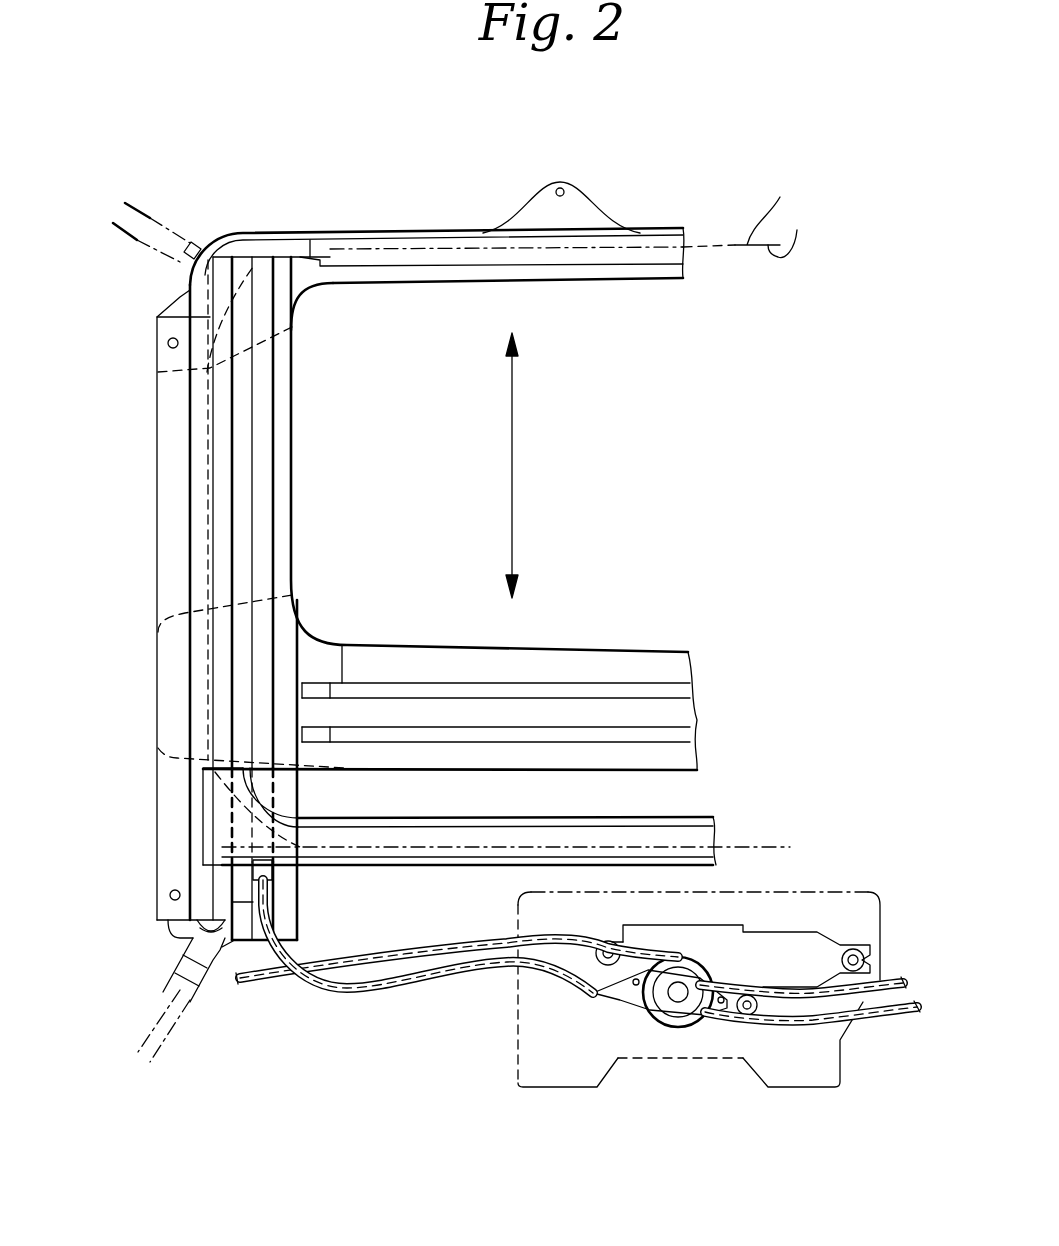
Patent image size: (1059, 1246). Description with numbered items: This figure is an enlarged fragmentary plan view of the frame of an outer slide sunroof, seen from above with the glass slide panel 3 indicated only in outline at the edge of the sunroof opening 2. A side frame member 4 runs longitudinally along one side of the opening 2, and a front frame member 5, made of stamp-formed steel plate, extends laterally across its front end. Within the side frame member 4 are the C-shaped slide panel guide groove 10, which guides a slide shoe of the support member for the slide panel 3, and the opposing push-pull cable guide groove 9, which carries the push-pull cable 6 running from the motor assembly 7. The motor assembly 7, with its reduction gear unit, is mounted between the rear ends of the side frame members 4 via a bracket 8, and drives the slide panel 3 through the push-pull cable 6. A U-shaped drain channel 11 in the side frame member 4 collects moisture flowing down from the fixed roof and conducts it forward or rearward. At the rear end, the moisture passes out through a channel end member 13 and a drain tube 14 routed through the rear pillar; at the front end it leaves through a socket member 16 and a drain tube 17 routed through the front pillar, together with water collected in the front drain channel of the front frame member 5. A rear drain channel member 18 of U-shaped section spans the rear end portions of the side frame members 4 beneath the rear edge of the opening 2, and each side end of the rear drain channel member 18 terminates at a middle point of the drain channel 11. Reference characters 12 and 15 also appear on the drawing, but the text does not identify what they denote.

The opening 2 is at (797, 230).
The slide panel 3 is at (780, 197).
The side frame member 4 is at (153, 423).
The front frame member 5 is at (663, 228).
The push-pull cable 6 is at (427, 1027).
The motor assembly 7 is at (672, 1033).
The bracket 8 is at (515, 1062).
The push-pull cable guide groove 9 is at (247, 455).
The slide panel guide groove 10 is at (233, 493).
The drain channel 11 is at (200, 508).
The lower bracket 12 is at (160, 803).
The channel end member 13 is at (230, 942).
The drain tube 14 is at (167, 1047).
The upper guide 15 is at (387, 233).
The socket member 16 is at (193, 240).
The drain tube 17 is at (142, 212).
The rear drain channel member 18 is at (702, 818).